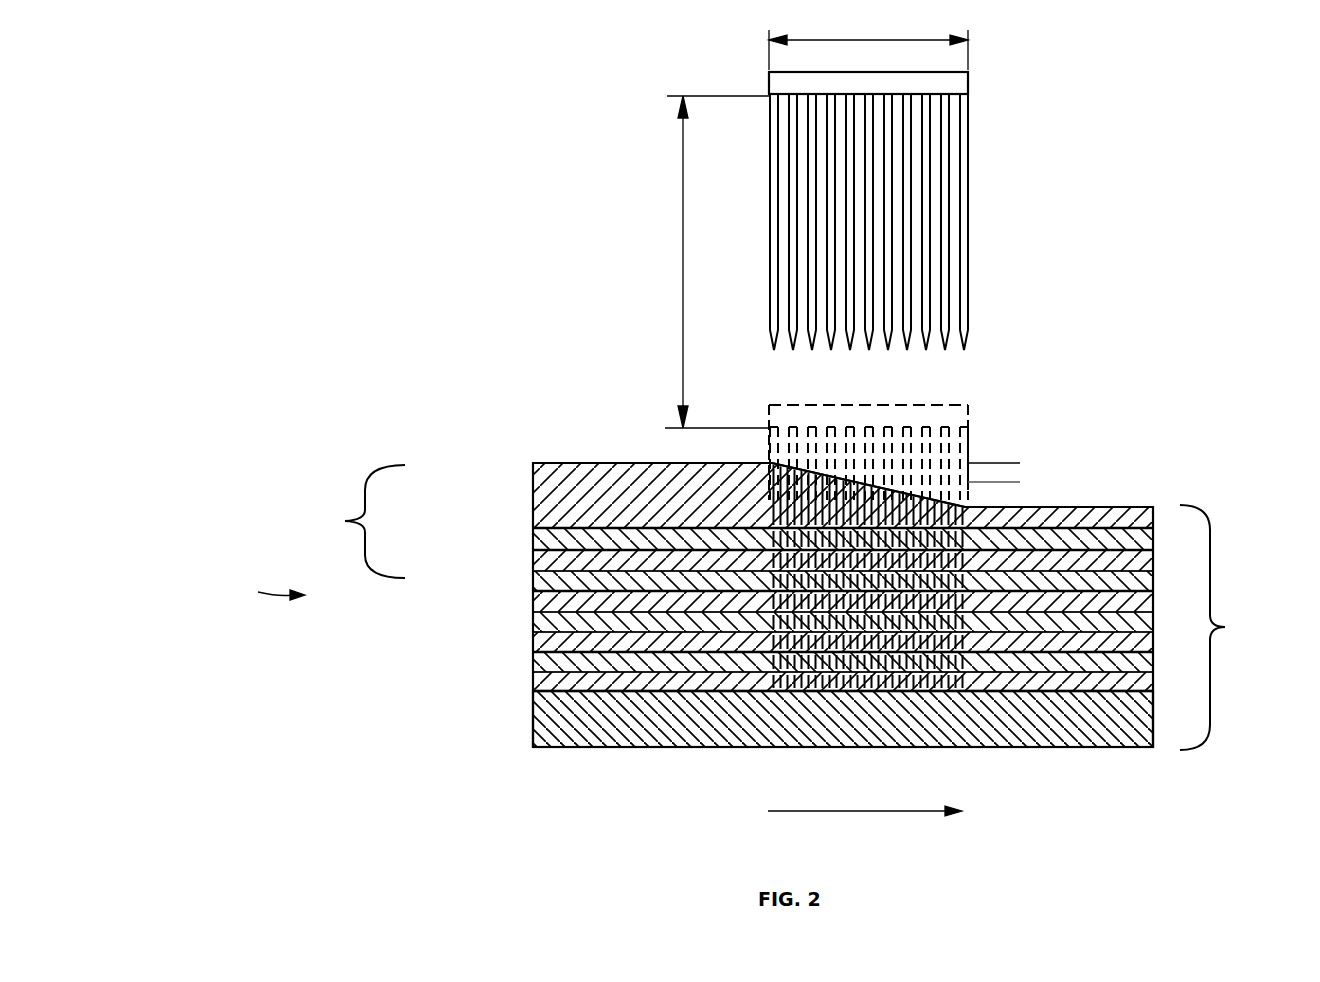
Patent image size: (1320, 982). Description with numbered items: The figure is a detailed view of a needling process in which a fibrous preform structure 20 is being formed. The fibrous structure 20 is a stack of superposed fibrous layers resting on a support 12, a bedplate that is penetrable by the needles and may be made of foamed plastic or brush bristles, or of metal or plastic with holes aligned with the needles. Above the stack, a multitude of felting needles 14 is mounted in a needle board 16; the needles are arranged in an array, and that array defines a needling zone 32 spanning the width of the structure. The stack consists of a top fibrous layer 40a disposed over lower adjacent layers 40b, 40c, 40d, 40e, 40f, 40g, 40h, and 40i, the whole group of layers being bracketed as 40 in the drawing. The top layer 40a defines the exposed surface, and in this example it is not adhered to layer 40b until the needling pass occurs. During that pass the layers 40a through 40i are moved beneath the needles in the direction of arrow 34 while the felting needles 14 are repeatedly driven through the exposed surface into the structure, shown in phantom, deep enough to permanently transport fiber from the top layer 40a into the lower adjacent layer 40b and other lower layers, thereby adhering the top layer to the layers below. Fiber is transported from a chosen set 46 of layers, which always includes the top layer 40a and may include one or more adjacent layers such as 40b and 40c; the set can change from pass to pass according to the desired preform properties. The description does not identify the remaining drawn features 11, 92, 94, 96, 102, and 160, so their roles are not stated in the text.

The laminated article 11 is at (585, 462).
The support 12 is at (620, 748).
The felting needles 14 is at (919, 208).
The needle board 16 is at (968, 82).
The fibrous preform structure 20 is at (265, 588).
The needling zone 32 is at (884, 38).
The arrow 34 is at (912, 806).
The layer stack 40 is at (830, 606).
The top fibrous layer 40a is at (533, 478).
The lower adjacent layer 40b is at (533, 540).
The lower adjacent layer 40c is at (533, 561).
The lower adjacent layer 40d is at (533, 581).
The lower adjacent layer 40e is at (533, 601).
The lower adjacent layer 40f is at (533, 622).
The lower adjacent layer 40g is at (533, 642).
The lower adjacent layer 40h is at (533, 662).
The lower adjacent layer 40i is at (533, 682).
The chosen set of layers 46 is at (361, 521).
The lower surface reference 92 is at (1015, 482).
The upper surface reference 94 is at (978, 463).
The compressed top surface 96 is at (1075, 507).
The needle punching system 102 is at (1293, 255).
The needle stroke distance 160 is at (678, 180).